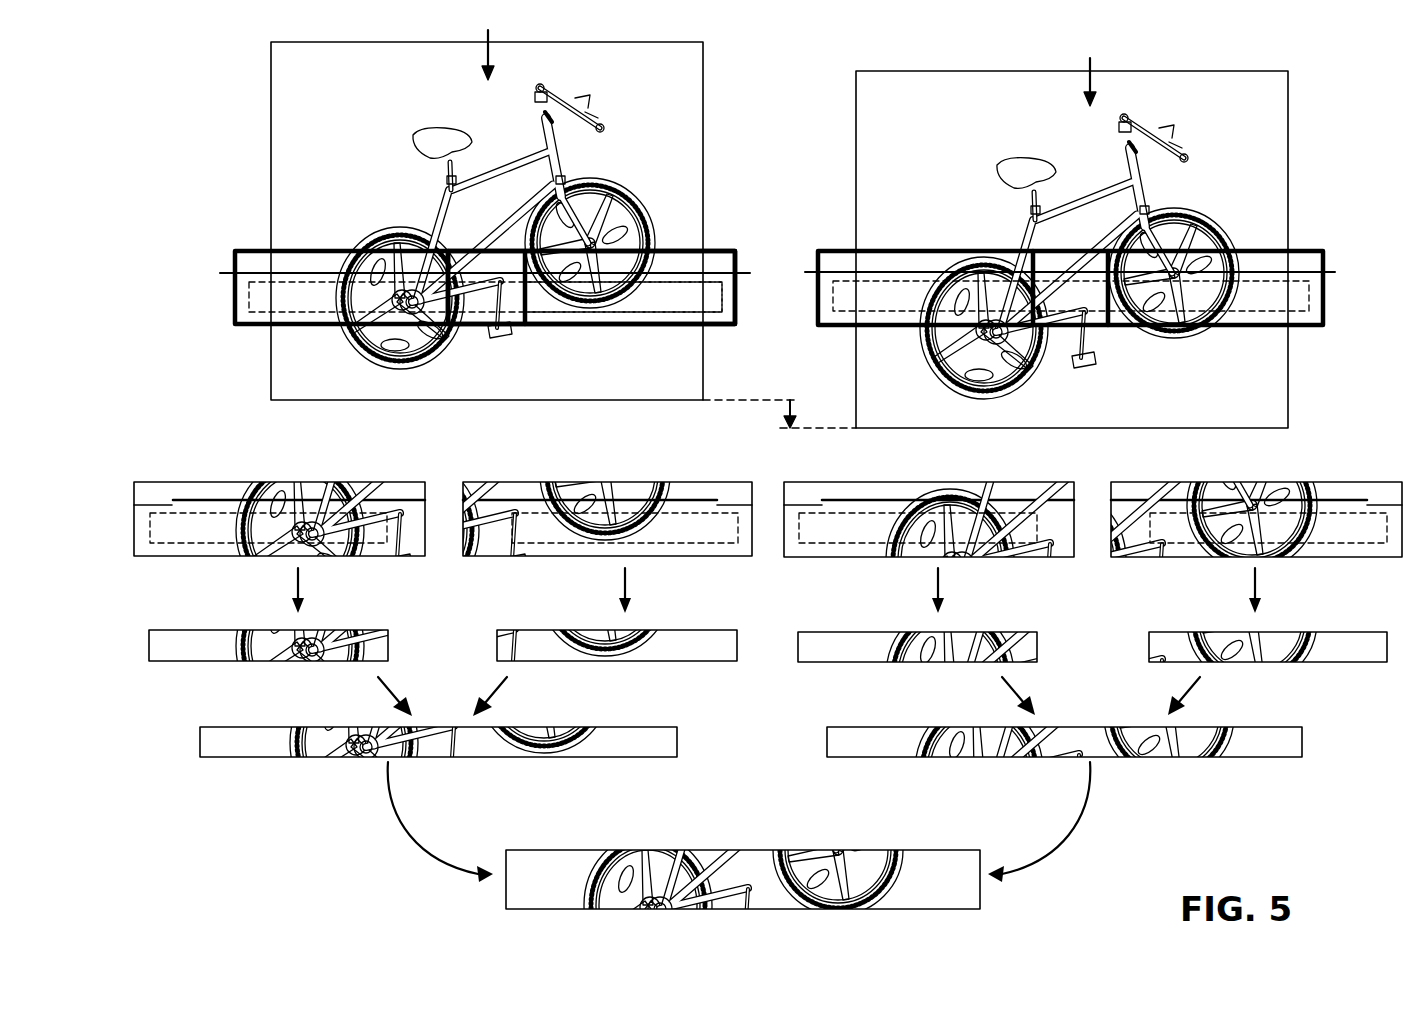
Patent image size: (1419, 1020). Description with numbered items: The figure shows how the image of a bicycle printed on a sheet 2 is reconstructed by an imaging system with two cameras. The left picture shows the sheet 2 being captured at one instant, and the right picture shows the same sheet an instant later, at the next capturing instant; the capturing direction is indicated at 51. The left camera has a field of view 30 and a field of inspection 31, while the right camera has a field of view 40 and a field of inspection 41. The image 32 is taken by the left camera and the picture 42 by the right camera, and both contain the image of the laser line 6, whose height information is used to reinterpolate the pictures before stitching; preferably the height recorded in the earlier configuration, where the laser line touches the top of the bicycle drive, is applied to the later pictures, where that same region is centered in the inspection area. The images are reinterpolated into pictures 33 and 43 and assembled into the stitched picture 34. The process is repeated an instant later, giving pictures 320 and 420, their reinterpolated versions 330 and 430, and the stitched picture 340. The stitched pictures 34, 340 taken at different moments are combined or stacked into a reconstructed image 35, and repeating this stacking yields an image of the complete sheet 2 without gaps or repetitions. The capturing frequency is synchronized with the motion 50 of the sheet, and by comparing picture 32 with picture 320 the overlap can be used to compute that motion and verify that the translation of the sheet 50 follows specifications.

The sheet 2 is at (668, 42).
The image capturing direction 51 is at (789, 53).
The laser line 6 is at (688, 270).
The field of view 30 is at (238, 326).
The field of inspection 31 is at (310, 314).
The field of view 40 is at (719, 326).
The field of inspection 41 is at (667, 314).
The motion of the sheet 50 is at (792, 410).
The image taken by the left camera 32 is at (290, 482).
The picture taken by the right camera 42 is at (733, 482).
The picture taken an instant later 320 is at (1010, 482).
The picture taken by the right camera an instant later 420 is at (1265, 482).
The reinterpolated picture 33 is at (347, 630).
The reinterpolated picture 43 is at (697, 630).
The reinterpolated picture 330 is at (978, 632).
The reinterpolated picture 430 is at (1328, 632).
The stitched picture 34 is at (435, 758).
The stitched picture 340 is at (1258, 757).
The reconstructed image 35 is at (787, 850).